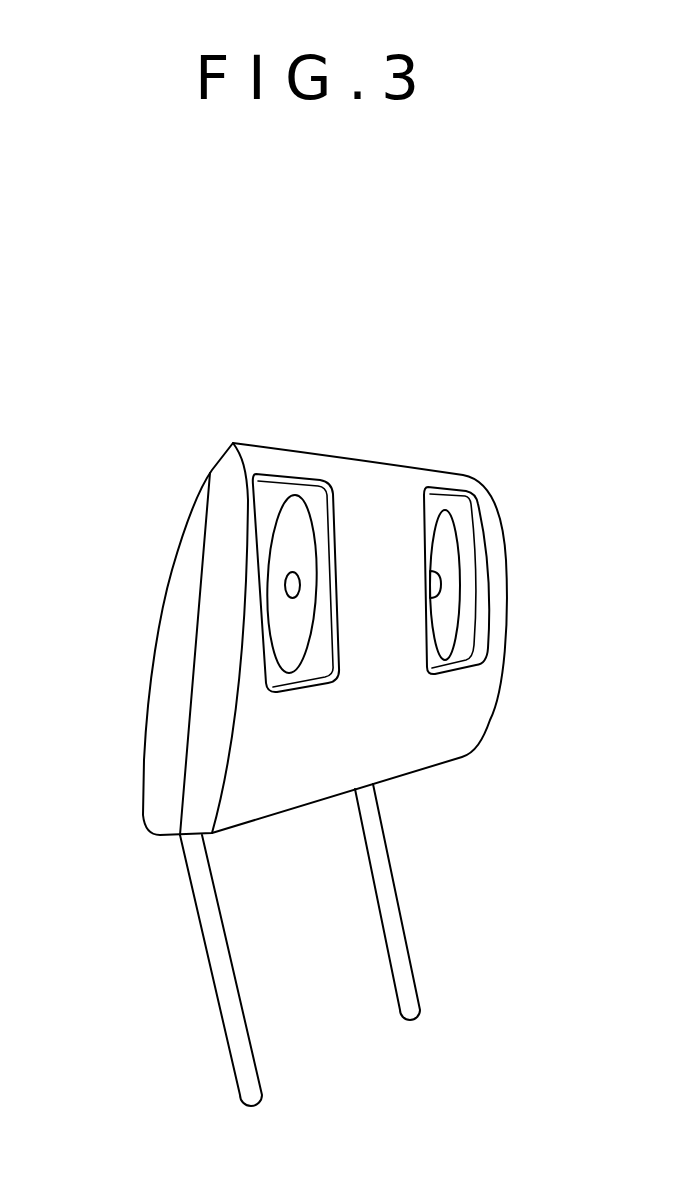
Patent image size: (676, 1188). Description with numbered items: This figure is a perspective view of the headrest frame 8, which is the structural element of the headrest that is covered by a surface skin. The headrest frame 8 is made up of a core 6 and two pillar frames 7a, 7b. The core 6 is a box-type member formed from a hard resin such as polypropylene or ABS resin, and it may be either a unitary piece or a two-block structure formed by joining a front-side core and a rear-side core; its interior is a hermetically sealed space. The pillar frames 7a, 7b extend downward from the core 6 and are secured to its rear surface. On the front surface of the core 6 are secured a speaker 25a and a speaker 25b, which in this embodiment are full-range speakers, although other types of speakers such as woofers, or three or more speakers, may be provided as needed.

The core 6 is at (380, 481).
The pillar frame 7a is at (235, 1017).
The pillar frame 7b is at (403, 966).
The headrest frame 8 is at (68, 377).
The speaker 25a is at (450, 593).
The speaker 25b is at (300, 606).